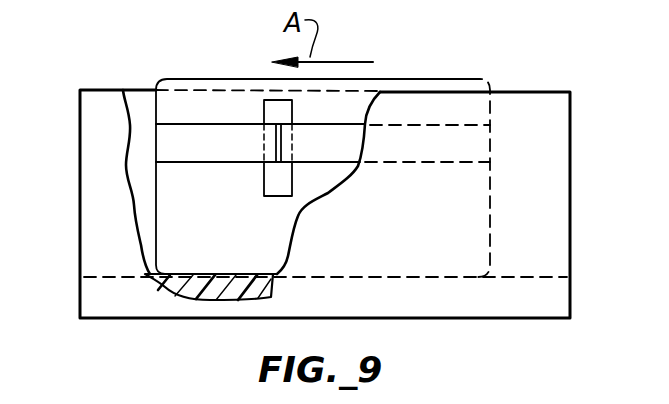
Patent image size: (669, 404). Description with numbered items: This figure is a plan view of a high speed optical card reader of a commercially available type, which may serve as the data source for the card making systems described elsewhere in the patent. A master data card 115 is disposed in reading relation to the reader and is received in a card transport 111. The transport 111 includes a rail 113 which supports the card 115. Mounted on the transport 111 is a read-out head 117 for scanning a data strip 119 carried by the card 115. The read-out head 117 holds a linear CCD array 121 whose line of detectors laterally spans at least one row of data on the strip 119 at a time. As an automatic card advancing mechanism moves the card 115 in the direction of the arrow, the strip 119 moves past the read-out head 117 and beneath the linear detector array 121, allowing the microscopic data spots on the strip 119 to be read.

The card transport 111 is at (438, 308).
The rail 113 is at (518, 277).
The master data card 115 is at (470, 88).
The read-out head 117 is at (270, 113).
The data strip 119 is at (332, 136).
The linear CCD array 121 is at (276, 150).